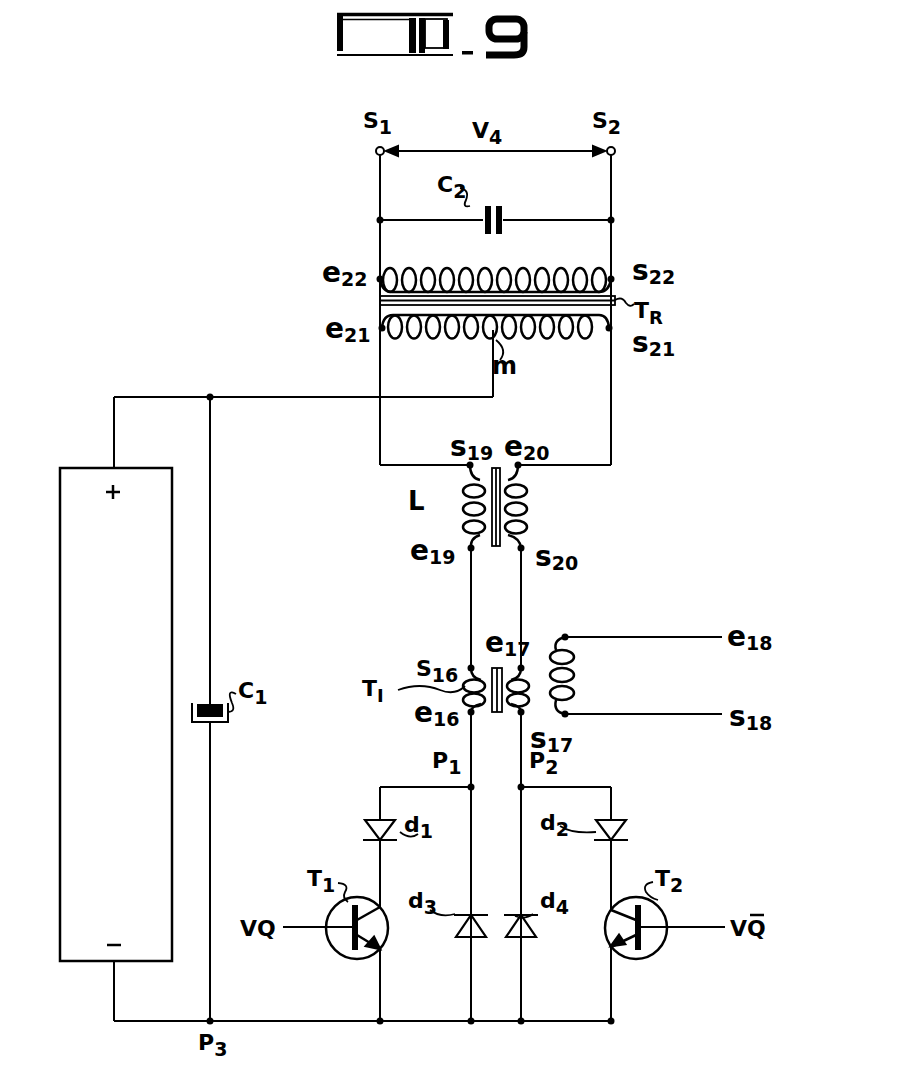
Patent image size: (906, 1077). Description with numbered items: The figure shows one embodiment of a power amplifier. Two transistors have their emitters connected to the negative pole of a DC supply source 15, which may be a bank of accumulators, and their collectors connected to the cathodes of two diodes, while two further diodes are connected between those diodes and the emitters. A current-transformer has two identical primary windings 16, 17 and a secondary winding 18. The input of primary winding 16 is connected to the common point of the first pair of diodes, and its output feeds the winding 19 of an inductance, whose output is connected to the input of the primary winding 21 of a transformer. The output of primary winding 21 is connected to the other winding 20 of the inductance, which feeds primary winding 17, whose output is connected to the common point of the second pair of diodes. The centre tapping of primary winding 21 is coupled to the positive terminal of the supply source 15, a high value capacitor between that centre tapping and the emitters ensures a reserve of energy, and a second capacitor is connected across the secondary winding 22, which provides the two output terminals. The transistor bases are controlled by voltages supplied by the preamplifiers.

The DC supply source 15 is at (80, 468).
The primary winding 16 is at (480, 708).
The primary winding 17 is at (512, 716).
The secondary winding 18 is at (576, 696).
The winding 19 is at (480, 540).
The winding 20 is at (527, 510).
The primary winding 21 is at (438, 333).
The secondary winding 22 is at (535, 276).